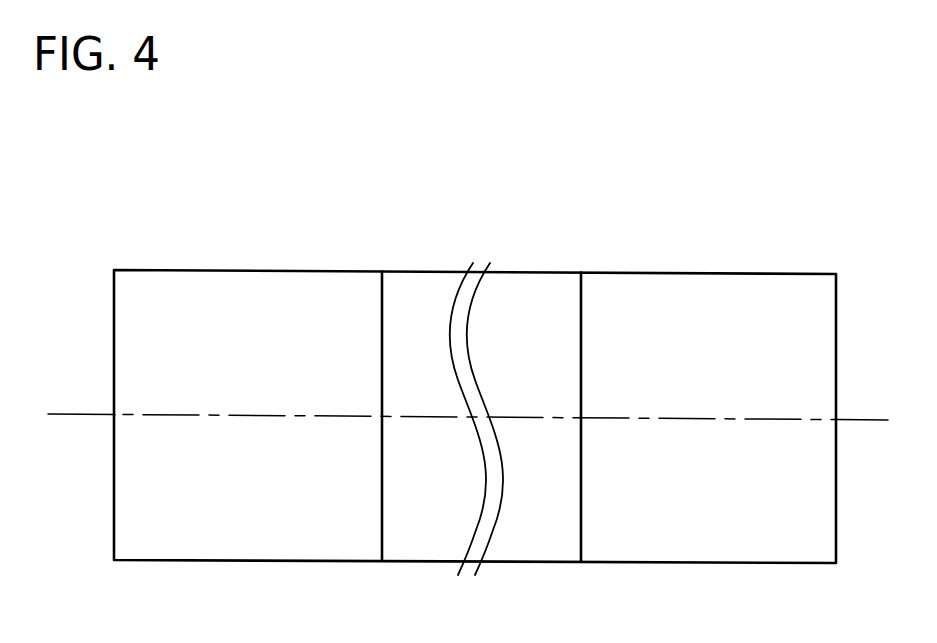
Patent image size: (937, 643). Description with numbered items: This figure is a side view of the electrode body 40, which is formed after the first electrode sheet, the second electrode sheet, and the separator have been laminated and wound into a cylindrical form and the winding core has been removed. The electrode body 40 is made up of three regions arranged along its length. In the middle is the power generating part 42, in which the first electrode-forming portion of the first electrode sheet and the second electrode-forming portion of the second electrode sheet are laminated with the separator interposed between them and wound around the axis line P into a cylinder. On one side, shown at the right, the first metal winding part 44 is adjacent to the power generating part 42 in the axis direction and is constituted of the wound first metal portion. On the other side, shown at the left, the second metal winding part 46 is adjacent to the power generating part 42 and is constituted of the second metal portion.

The electrode body 40 is at (392, 158).
The second metal winding part 46 is at (225, 287).
The power generating part 42 is at (522, 289).
The first metal winding part 44 is at (719, 292).
The axis line P is at (65, 414).